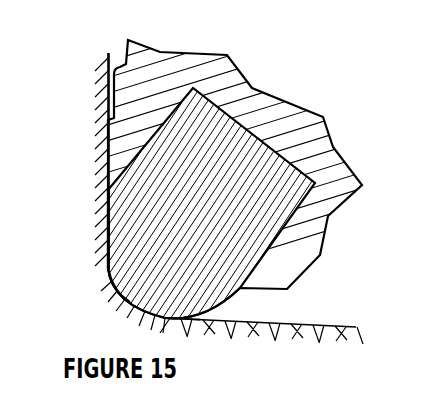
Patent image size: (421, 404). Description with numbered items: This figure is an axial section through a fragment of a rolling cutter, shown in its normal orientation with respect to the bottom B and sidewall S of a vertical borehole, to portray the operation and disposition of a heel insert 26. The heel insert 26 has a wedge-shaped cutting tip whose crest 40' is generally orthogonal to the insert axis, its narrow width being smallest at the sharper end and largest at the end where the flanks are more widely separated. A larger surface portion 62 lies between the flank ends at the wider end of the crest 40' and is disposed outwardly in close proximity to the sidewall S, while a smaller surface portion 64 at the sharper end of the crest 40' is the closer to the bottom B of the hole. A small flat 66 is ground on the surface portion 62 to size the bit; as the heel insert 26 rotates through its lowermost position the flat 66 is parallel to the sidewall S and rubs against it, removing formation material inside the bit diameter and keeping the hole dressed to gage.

The sidewall S is at (111, 57).
The heel insert 26 is at (143, 148).
The crest 40' is at (202, 217).
The flat 66 is at (105, 233).
The surface portion 62 is at (107, 278).
The surface portion 64 is at (181, 318).
The bottom B is at (328, 330).